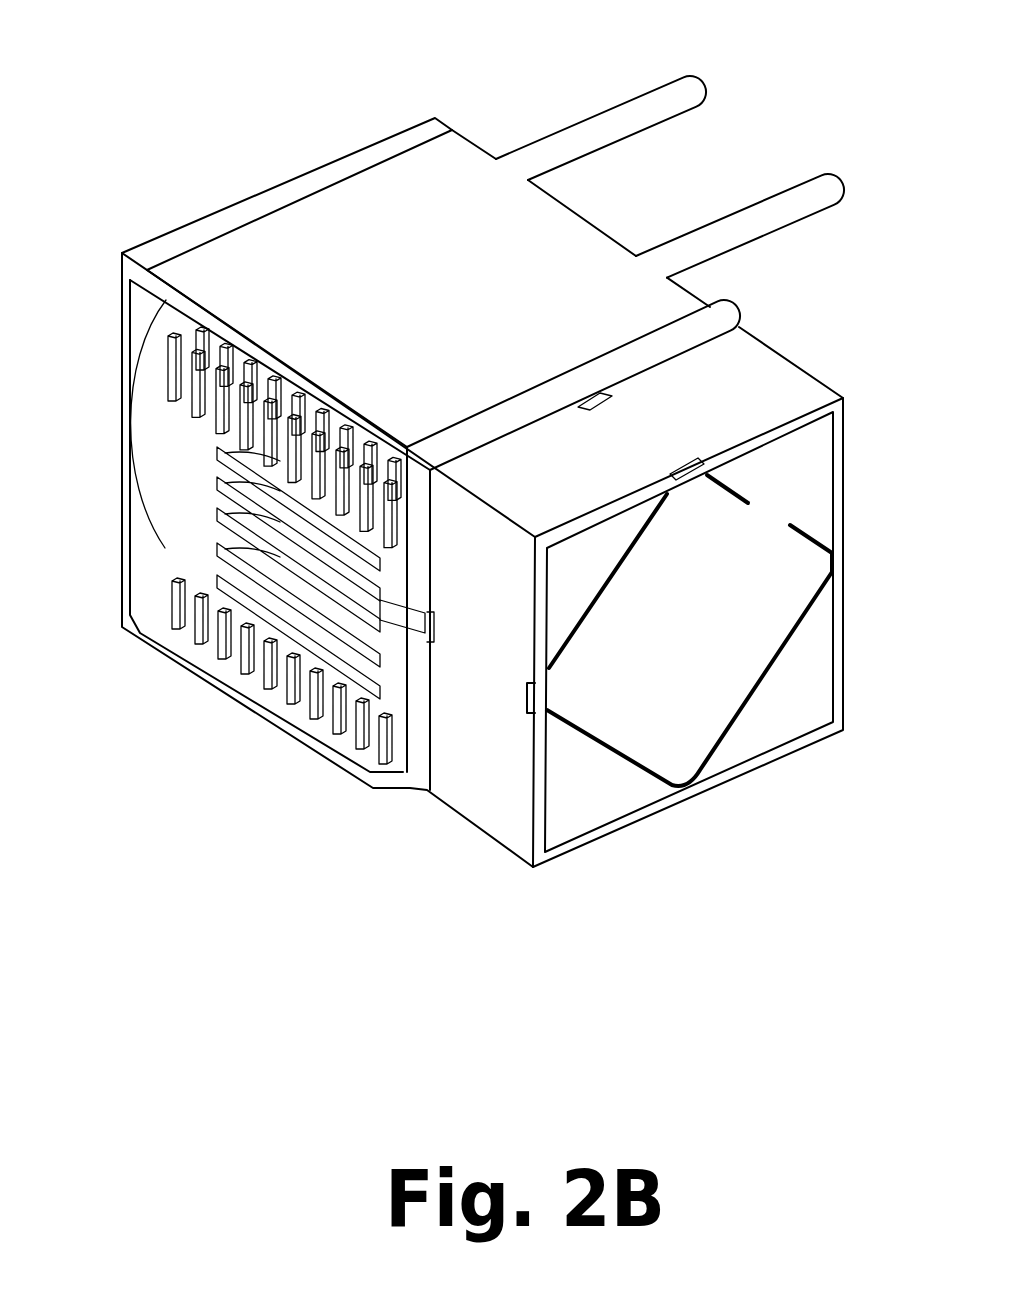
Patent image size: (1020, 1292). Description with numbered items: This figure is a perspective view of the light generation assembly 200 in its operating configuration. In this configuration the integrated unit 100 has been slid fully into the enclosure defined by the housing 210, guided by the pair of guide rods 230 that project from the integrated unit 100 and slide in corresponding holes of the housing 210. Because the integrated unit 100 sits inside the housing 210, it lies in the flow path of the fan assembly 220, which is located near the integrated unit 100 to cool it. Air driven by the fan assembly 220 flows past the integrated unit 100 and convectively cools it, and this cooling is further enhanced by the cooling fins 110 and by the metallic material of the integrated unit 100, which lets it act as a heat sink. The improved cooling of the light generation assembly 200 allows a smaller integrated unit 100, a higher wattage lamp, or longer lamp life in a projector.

The light generation assembly 200 is at (317, 115).
The housing 210 is at (453, 225).
The fan assembly 220 is at (697, 690).
The guide rods 230 is at (823, 188).
The integrated unit 100 is at (217, 518).
The cooling fins 110 is at (382, 742).